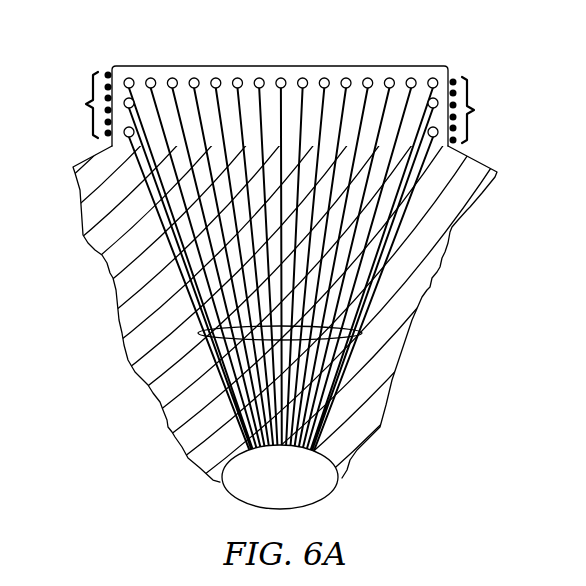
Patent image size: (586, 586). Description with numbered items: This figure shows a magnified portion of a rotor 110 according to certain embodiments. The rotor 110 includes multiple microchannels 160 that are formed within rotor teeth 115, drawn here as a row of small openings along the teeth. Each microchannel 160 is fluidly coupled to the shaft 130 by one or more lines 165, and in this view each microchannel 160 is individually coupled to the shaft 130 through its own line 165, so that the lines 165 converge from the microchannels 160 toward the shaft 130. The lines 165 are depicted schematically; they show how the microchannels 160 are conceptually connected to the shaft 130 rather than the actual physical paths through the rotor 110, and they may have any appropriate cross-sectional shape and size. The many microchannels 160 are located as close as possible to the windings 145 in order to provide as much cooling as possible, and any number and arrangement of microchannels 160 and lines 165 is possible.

The rotor 110 is at (420, 252).
The rotor teeth 115 is at (316, 65).
The shaft 130 is at (300, 496).
The windings 145 is at (487, 112).
The microchannels 160 is at (193, 78).
The lines 165 is at (362, 333).